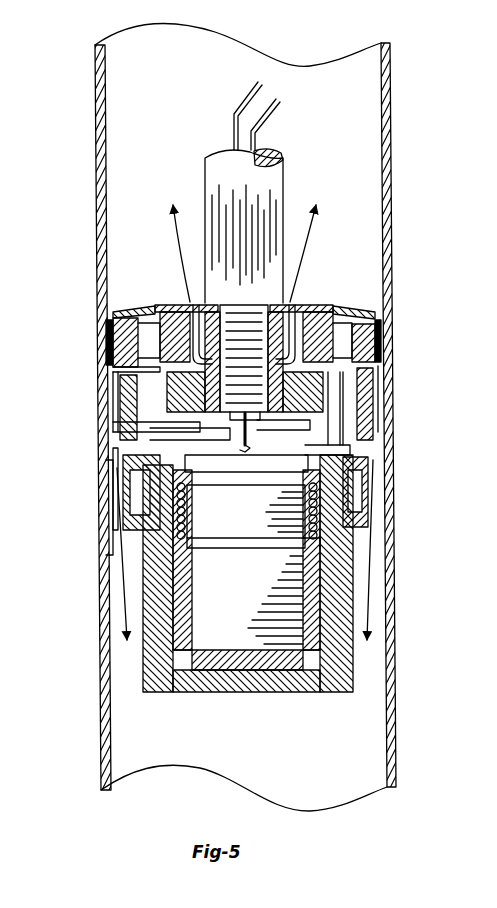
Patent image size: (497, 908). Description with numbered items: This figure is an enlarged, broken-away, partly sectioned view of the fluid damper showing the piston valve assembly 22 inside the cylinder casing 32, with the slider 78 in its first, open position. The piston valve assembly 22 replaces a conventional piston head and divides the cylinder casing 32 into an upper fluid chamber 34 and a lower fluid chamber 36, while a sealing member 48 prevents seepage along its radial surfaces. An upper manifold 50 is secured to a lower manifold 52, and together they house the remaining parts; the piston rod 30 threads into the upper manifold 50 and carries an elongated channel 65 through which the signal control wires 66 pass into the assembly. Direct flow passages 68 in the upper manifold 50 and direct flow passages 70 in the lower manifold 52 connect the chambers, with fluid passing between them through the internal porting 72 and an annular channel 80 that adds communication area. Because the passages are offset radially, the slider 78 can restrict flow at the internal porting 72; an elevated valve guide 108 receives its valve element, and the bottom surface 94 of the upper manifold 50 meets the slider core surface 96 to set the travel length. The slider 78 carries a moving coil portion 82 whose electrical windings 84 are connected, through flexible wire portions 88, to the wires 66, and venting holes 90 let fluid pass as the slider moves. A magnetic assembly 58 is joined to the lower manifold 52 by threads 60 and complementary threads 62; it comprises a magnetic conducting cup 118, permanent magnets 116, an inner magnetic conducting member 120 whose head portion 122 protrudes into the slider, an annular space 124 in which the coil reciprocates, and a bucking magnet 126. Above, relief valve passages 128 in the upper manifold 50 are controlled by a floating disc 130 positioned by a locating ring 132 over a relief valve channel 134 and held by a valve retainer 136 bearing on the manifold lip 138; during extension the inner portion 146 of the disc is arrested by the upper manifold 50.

The piston valve assembly 22 is at (360, 664).
The piston rod 30 is at (200, 164).
The cylinder casing 32 is at (97, 138).
The fluid chamber 34 is at (358, 178).
The fluid chamber 36 is at (320, 789).
The sealing member 48 is at (97, 347).
The upper manifold 50 is at (368, 398).
The lower manifold 52 is at (112, 487).
The magnetic assembly 58 is at (142, 700).
The threads 60 is at (135, 505).
The complementary threads 62 is at (145, 550).
The elongated channel 65 is at (262, 152).
The signal control wires 66 is at (250, 84).
The direct flow passages 68 is at (210, 312).
The direct flow passages 70 is at (370, 452).
The internal porting 72 is at (345, 367).
The slider 78 is at (360, 480).
The annular channel 80 is at (362, 457).
The moving coil portion 82 is at (322, 546).
The electrical windings 84 is at (190, 508).
The flexible wire portions 88 is at (255, 456).
The venting holes 90 is at (345, 436).
The bottom surface 94 is at (113, 431).
The slider core surface 96 is at (230, 432).
The elevated valve guide 108 is at (160, 372).
The permanent magnets 116 is at (180, 692).
The magnetic conducting cup 118 is at (350, 684).
The inner magnetic conducting member 120 is at (240, 623).
The head portion 122 is at (255, 530).
The annular space 124 is at (192, 546).
The bucking magnet 126 is at (226, 688).
The relief valve passages 128 is at (345, 349).
The floating disc 130 is at (362, 306).
The locating ring 132 is at (325, 302).
The relief valve channel 134 is at (378, 325).
The valve retainer 136 is at (165, 300).
The manifold lip 138 is at (106, 318).
The inner portion 146 is at (106, 326).